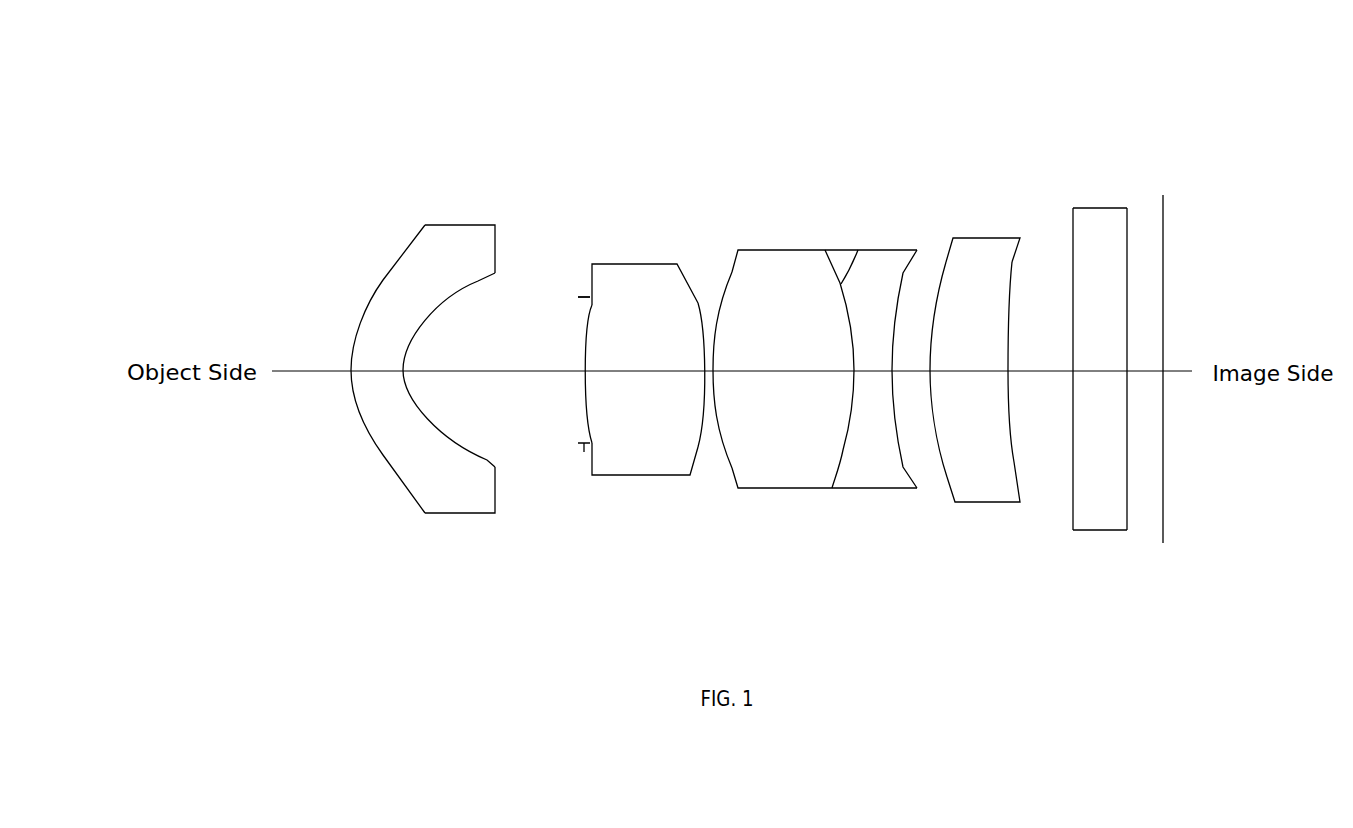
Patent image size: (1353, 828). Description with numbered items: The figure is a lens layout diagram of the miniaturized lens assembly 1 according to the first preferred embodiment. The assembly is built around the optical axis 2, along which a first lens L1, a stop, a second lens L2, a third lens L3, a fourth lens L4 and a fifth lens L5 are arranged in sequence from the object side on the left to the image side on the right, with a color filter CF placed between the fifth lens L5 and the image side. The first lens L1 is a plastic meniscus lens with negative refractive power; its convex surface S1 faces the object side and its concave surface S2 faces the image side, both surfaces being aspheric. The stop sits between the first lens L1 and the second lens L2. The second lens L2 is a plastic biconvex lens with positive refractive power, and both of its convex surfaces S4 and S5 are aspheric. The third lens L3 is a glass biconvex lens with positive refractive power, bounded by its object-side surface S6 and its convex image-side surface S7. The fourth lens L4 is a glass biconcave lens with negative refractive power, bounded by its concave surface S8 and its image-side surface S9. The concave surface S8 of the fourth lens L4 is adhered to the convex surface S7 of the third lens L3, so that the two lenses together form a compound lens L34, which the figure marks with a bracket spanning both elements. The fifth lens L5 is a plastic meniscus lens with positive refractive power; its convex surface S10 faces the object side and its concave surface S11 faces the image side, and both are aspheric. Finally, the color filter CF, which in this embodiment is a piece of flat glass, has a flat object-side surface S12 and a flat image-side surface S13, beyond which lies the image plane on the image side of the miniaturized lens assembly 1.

The miniaturized lens assembly 1 is at (282, 140).
The optical axis 2 is at (312, 371).
The first lens L1 is at (422, 362).
The second lens L2 is at (621, 348).
The third lens L3 is at (783, 363).
The fourth lens L4 is at (871, 378).
The compound lens L34 is at (815, 387).
The fifth lens L5 is at (979, 363).
The color filter CF is at (1104, 365).
The convex surface of the first lens S1 is at (378, 293).
The concave surface of the first lens S2 is at (478, 280).
The convex surface of the second lens S4 is at (598, 303).
The convex surface of the second lens S5 is at (677, 264).
The surface of the third lens S6 is at (730, 262).
The convex surface of the third lens S7 is at (825, 250).
The concave surface of the fourth lens S8 is at (858, 250).
The surface of the fourth lens S9 is at (902, 252).
The convex surface of the fifth lens S10 is at (947, 262).
The concave surface of the fifth lens S11 is at (1012, 262).
The surface of the color filter S12 is at (1073, 262).
The surface of the color filter S13 is at (1127, 260).